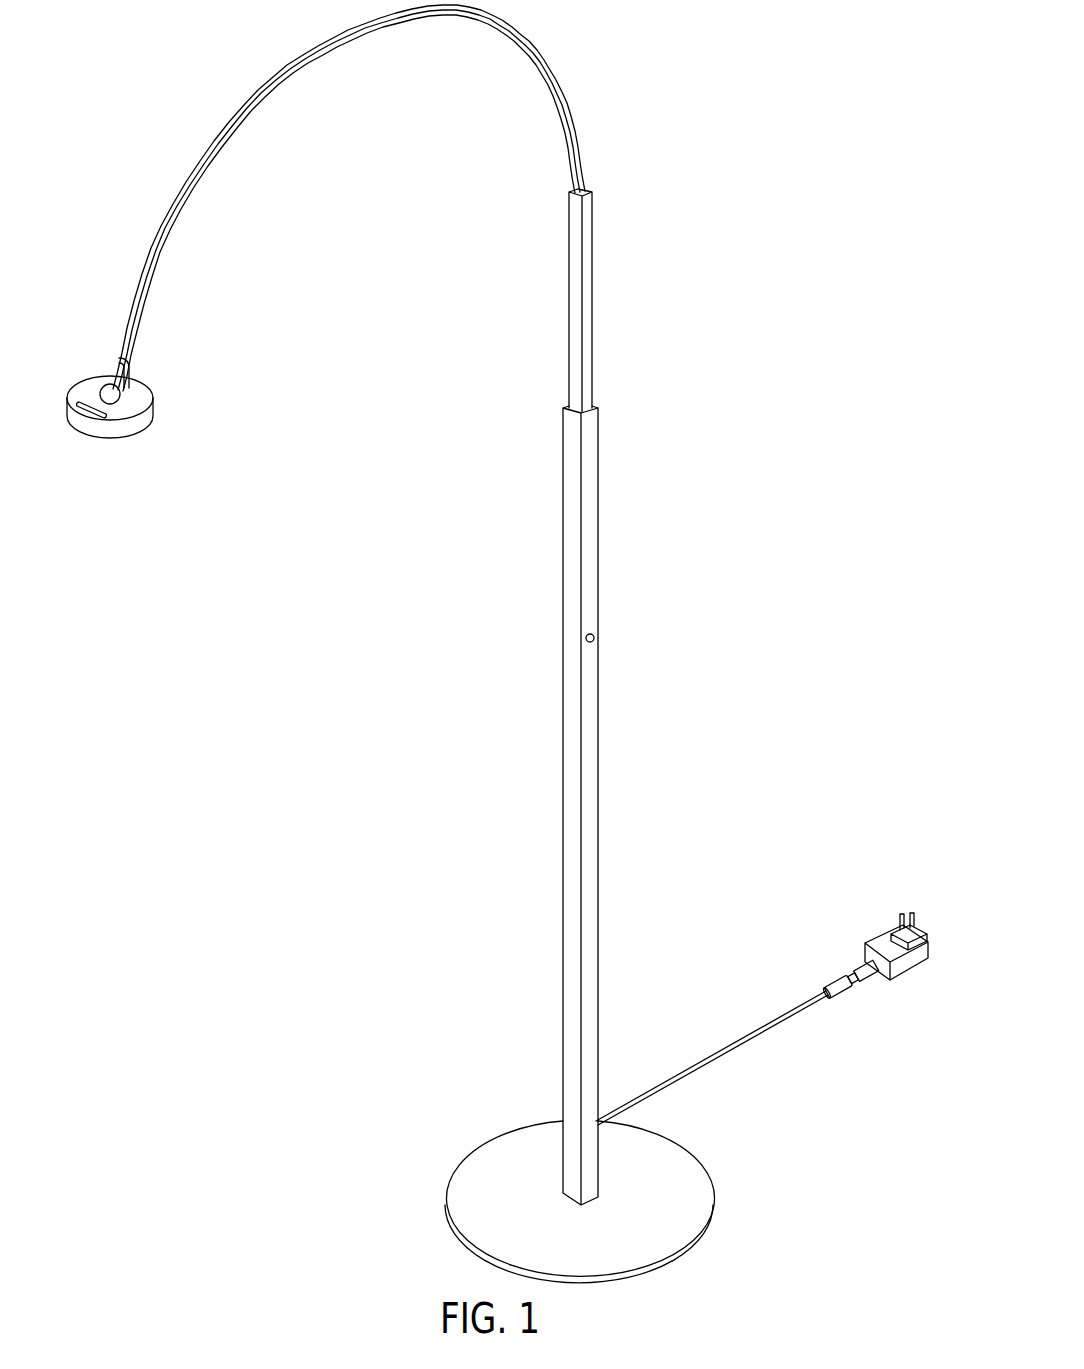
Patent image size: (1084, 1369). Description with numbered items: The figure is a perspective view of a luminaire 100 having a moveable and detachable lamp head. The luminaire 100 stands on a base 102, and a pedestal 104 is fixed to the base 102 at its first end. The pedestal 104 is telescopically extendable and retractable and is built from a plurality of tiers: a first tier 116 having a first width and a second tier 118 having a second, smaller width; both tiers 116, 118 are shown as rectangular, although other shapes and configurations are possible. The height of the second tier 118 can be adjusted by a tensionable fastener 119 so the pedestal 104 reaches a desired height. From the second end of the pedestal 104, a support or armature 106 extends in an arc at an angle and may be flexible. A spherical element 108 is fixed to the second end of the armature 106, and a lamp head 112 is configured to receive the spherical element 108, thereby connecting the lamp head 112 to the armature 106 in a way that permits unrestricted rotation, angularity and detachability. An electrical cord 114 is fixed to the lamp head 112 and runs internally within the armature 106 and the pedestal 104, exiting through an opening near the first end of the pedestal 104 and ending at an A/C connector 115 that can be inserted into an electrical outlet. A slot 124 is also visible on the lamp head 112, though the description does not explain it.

The luminaire 100 is at (704, 79).
The base 102 is at (700, 1183).
The pedestal 104 is at (634, 391).
The armature 106 is at (292, 76).
The spherical element 108 is at (104, 388).
The lamp head 112 is at (143, 437).
The electrical cord 114 is at (133, 364).
The A/C connector 115 is at (905, 976).
The first tier 116 is at (596, 545).
The second tier 118 is at (592, 312).
The tensionable fastener 119 is at (596, 638).
The slot 124 is at (93, 432).